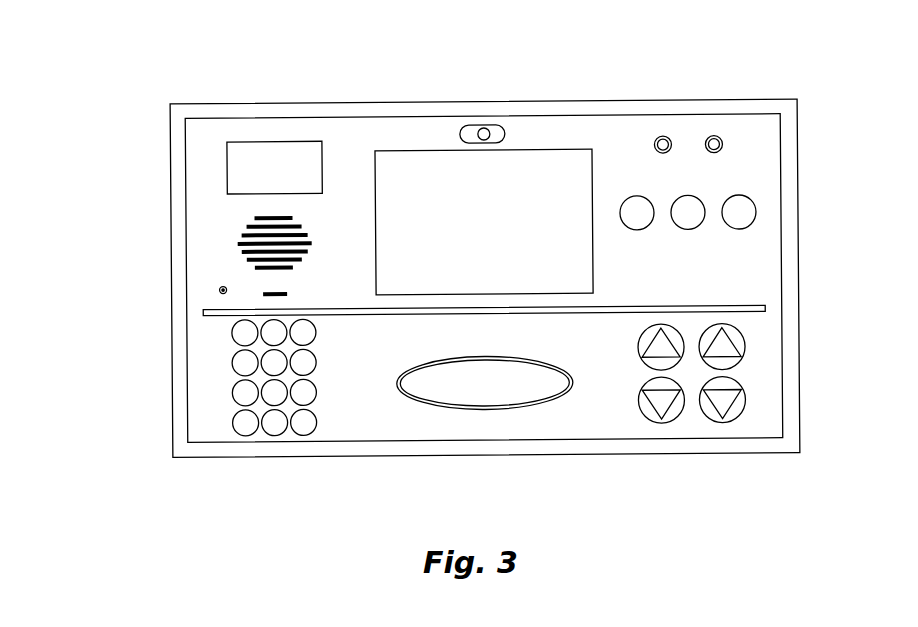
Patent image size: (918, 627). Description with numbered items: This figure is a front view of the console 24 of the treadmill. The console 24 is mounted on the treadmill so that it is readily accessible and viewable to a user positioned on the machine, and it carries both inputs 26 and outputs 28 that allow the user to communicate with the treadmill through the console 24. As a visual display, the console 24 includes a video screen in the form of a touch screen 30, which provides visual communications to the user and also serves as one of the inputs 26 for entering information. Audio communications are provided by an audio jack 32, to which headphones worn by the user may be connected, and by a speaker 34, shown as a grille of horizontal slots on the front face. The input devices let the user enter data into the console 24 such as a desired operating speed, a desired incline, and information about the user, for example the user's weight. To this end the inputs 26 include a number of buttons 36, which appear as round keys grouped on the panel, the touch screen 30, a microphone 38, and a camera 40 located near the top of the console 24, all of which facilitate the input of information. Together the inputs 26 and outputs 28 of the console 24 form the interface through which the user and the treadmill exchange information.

The console 24 is at (120, 90).
The inputs 26 is at (760, 123).
The outputs 28 is at (315, 135).
The touch screen 30 is at (440, 160).
The audio jack 32 is at (225, 290).
The speaker 34 is at (237, 245).
The buttons 36 is at (718, 135).
The microphone 38 is at (263, 295).
The camera 40 is at (487, 128).